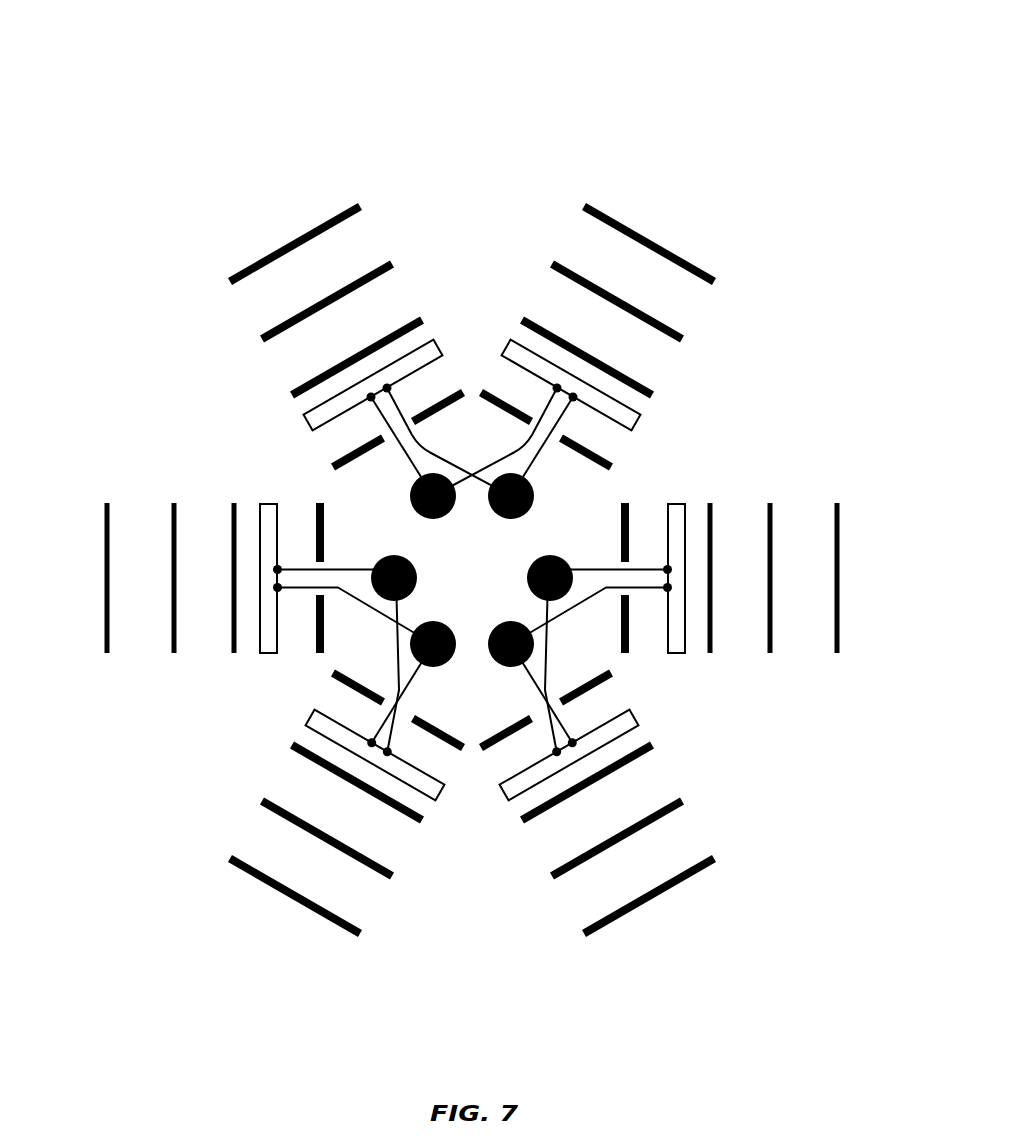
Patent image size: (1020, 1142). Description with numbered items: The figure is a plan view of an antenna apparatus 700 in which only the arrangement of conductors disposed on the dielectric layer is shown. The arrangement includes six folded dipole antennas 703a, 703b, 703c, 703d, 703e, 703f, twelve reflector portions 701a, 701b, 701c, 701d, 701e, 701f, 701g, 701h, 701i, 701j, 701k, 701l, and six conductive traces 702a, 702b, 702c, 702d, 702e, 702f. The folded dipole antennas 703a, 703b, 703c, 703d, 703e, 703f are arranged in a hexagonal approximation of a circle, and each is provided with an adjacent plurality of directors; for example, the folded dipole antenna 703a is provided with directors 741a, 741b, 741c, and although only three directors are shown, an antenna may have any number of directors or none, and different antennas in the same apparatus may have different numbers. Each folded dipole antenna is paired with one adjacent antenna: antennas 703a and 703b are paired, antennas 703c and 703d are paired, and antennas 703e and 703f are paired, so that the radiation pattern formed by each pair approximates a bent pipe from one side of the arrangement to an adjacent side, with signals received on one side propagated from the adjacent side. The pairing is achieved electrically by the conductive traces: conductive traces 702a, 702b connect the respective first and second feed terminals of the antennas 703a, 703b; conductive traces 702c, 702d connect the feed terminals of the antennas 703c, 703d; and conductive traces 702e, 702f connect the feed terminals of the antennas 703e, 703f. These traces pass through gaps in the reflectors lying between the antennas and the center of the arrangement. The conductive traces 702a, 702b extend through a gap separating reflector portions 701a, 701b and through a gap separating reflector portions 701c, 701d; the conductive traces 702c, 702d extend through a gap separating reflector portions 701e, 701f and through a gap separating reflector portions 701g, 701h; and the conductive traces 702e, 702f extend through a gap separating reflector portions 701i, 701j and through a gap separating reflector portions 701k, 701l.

The antenna apparatus 700 is at (706, 100).
The director 741a is at (320, 377).
The director 741b is at (292, 322).
The director 741c is at (258, 266).
The folded dipole antenna 703a is at (305, 422).
The folded dipole antenna 703b is at (641, 420).
The folded dipole antenna 703c is at (683, 504).
The folded dipole antenna 703d is at (636, 717).
The folded dipole antenna 703e is at (308, 716).
The folded dipole antenna 703f is at (262, 504).
The conductive trace 702a is at (403, 460).
The conductive trace 702b is at (547, 462).
The conductive trace 702c is at (602, 568).
The conductive trace 702d is at (547, 730).
The conductive trace 702e is at (403, 723).
The conductive trace 702f is at (345, 568).
The reflector portion 701a is at (333, 467).
The reflector portion 701b is at (449, 392).
The reflector portion 701c is at (500, 395).
The reflector portion 701d is at (612, 467).
The reflector portion 701e is at (630, 510).
The reflector portion 701f is at (628, 646).
The reflector portion 701g is at (590, 674).
The reflector portion 701h is at (507, 716).
The reflector portion 701i is at (445, 718).
The reflector portion 701j is at (357, 674).
The reflector portion 701k is at (318, 646).
The reflector portion 701l is at (316, 510).